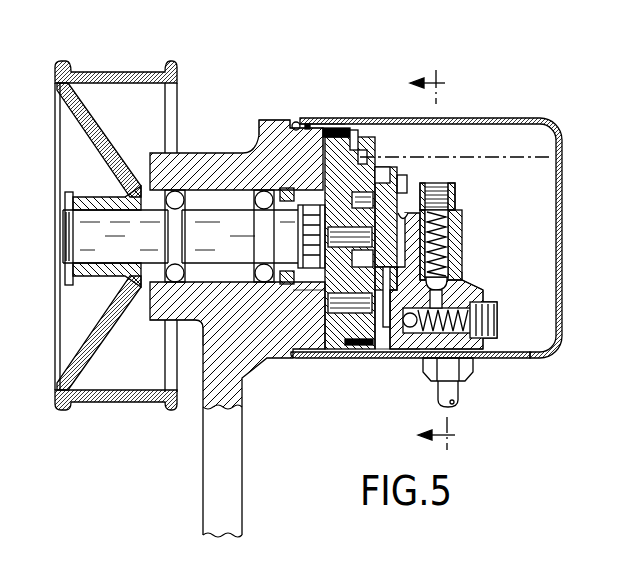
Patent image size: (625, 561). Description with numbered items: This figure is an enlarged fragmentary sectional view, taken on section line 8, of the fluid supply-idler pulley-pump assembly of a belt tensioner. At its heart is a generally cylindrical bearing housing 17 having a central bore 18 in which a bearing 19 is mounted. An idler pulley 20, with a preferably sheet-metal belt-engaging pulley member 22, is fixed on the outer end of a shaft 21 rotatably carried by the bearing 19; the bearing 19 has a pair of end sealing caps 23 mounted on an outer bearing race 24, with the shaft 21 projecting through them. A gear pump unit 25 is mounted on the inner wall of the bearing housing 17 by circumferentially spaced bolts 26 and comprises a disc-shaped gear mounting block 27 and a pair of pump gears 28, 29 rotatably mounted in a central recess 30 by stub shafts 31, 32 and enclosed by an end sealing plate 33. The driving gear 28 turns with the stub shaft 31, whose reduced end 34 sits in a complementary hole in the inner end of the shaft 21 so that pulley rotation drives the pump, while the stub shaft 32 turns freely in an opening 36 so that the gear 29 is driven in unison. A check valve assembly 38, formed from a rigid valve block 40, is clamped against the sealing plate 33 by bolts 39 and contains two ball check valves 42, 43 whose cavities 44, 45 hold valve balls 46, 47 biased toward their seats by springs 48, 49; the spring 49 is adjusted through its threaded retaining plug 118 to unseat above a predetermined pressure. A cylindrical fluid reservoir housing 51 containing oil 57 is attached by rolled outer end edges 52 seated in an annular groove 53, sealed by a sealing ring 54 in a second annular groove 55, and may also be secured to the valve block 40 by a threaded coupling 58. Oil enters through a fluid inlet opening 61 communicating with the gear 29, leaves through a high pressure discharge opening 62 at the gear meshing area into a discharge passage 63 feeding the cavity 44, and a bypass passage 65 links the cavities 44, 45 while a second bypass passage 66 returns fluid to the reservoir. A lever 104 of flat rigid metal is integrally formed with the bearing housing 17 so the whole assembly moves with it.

The section line 8 is at (440, 260).
The bearing housing 17 is at (218, 160).
The central bore 18 is at (198, 186).
The bearing 19 is at (198, 324).
The idler pulley 20 is at (126, 72).
The shaft 21 is at (80, 239).
The pulley member 22 is at (108, 410).
The end sealing caps 23 is at (147, 197).
The outer bearing race 24 is at (209, 281).
The gear pump unit 25 is at (332, 360).
The bolts 26 is at (359, 135).
The gear mounting block 27 is at (367, 152).
The pump gear 28 is at (326, 190).
The pump gear 29 is at (321, 283).
The central recess 30 is at (298, 254).
The stub shaft 31 is at (372, 237).
The stub shaft 32 is at (384, 322).
The end sealing plate 33 is at (380, 198).
The reduced end 34 is at (298, 230).
The opening 36 is at (316, 315).
The check valve assembly 38 is at (485, 287).
The bolts 39 is at (405, 176).
The valve block 40 is at (485, 297).
The ball check valve 42 is at (471, 331).
The ball check valve 43 is at (453, 226).
The cavity 44 is at (485, 305).
The cavity 45 is at (463, 238).
The valve ball 46 is at (411, 328).
The valve ball 47 is at (476, 282).
The spring 48 is at (483, 317).
The spring 49 is at (459, 262).
The fluid reservoir housing 51 is at (517, 120).
The rolled outer end edges 52 is at (293, 121).
The annular groove 53 is at (286, 124).
The sealing ring 54 is at (308, 123).
The annular groove 55 is at (329, 128).
The oil 57 is at (527, 157).
The threaded coupling 58 is at (466, 381).
The fluid inlet opening 61 is at (385, 352).
The high pressure discharge opening 62 is at (388, 266).
The discharge passage 63 is at (405, 352).
The bypass passage 65 is at (443, 307).
The second bypass passage 66 is at (470, 273).
The lever 104 is at (246, 528).
The retaining plug 118 is at (453, 208).